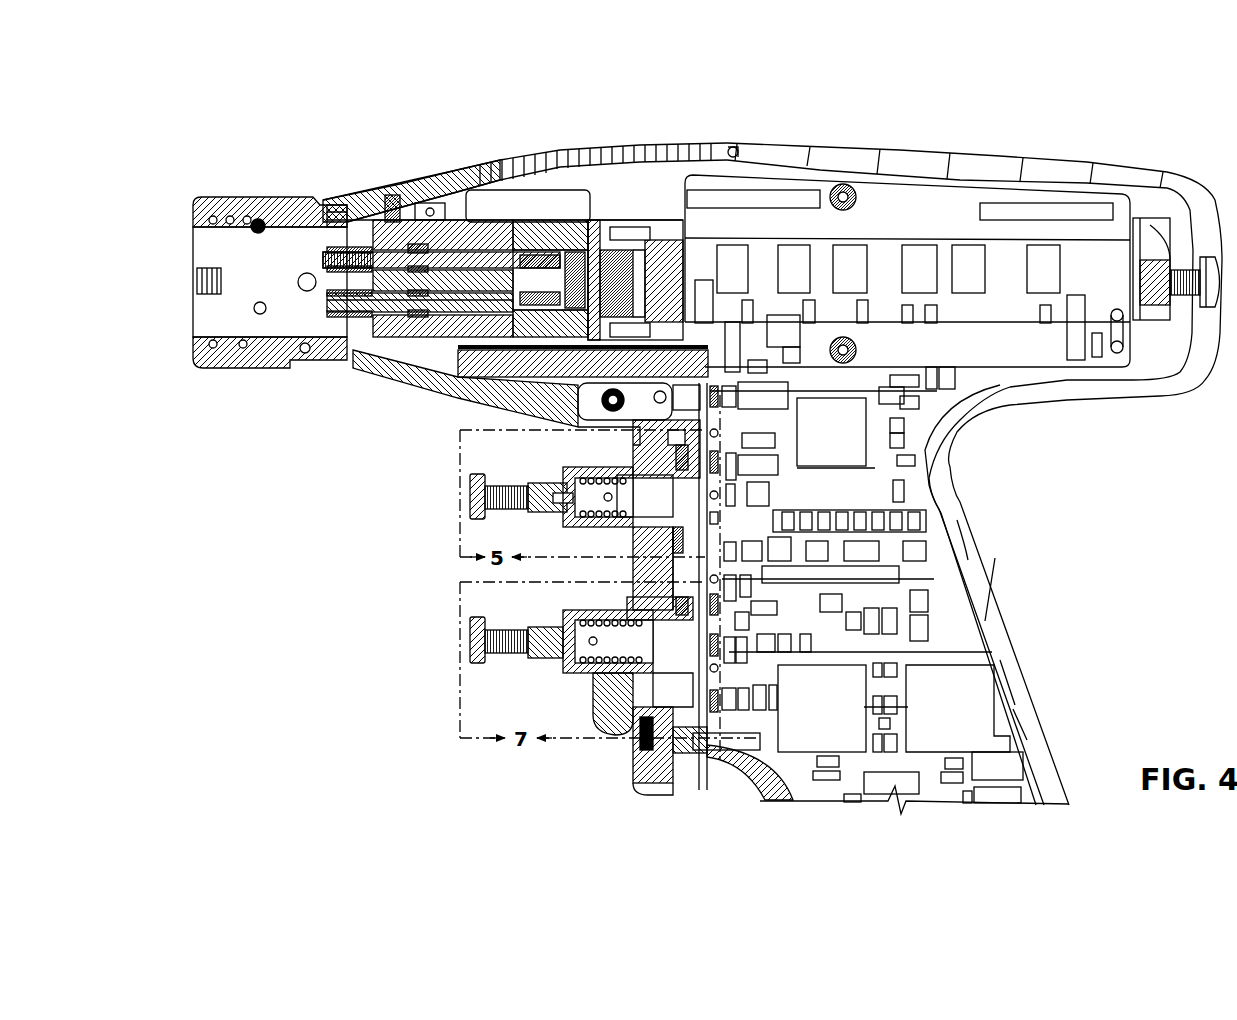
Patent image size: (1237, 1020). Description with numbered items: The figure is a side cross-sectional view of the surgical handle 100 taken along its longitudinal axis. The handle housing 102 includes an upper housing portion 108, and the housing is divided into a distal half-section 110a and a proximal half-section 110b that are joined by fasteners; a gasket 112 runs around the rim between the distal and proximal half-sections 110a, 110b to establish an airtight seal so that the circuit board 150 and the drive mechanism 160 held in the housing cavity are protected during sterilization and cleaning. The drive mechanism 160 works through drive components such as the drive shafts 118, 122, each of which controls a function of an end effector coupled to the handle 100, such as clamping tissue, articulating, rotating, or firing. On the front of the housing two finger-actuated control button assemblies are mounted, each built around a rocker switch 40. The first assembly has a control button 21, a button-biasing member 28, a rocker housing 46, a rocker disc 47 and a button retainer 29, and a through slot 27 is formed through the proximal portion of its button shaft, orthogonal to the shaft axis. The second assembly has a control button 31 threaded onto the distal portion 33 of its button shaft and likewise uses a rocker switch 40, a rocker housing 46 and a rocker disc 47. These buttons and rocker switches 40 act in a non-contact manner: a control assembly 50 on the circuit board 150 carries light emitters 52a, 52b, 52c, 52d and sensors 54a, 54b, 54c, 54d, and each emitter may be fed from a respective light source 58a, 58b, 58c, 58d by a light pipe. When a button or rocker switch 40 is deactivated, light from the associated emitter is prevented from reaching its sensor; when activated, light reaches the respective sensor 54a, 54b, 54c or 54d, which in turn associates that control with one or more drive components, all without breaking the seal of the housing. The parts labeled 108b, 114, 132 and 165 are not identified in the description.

The surgical handle 100 is at (985, 112).
The handle housing 102 is at (1065, 163).
The upper housing portion 108 is at (225, 195).
The nose lower portion 108b is at (200, 325).
The distal half-section 110a is at (490, 155).
The proximal half-section 110b is at (1150, 178).
The gasket 112 is at (733, 147).
The gear case 114 is at (362, 200).
The drive shaft 118 is at (330, 302).
The drive shaft 122 is at (325, 252).
The trigger assembly 132 is at (640, 405).
The circuit board 150 is at (885, 190).
The drive mechanism 160 is at (535, 205).
The end cap 165 is at (432, 203).
The control button 21 is at (470, 497).
The through slot 27 is at (563, 488).
The button-biasing member 28 is at (587, 522).
The button retainer 29 is at (712, 574).
The control button 31 is at (470, 640).
The distal portion 33 is at (550, 658).
The rocker switch 40 is at (570, 515).
The rocker housing 46 is at (660, 553).
The rocker disc 47 is at (683, 545).
The control assembly 50 is at (880, 480).
The light emitter 52a is at (613, 500).
The light emitter 52b is at (680, 462).
The light emitter 52c is at (593, 647).
The light emitter 52d is at (685, 610).
The sensor 54a is at (722, 520).
The sensor 54b is at (720, 460).
The sensor 54c is at (720, 642).
The sensor 54d is at (719, 604).
The light source 58a is at (718, 497).
The light source 58b is at (716, 432).
The light source 58c is at (720, 668).
The light source 58d is at (718, 579).